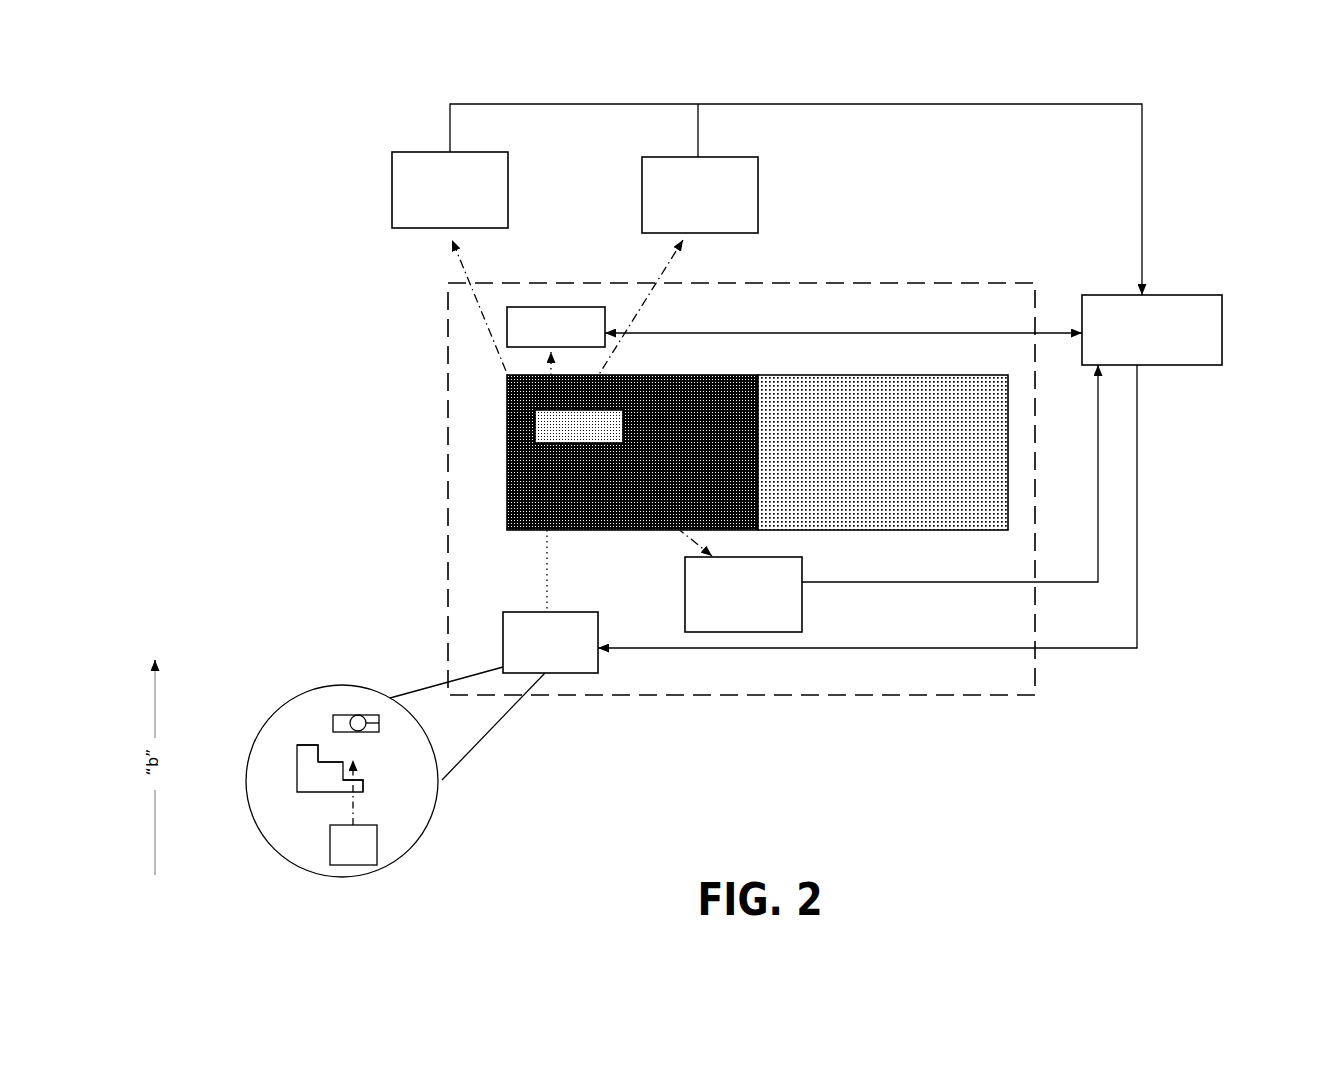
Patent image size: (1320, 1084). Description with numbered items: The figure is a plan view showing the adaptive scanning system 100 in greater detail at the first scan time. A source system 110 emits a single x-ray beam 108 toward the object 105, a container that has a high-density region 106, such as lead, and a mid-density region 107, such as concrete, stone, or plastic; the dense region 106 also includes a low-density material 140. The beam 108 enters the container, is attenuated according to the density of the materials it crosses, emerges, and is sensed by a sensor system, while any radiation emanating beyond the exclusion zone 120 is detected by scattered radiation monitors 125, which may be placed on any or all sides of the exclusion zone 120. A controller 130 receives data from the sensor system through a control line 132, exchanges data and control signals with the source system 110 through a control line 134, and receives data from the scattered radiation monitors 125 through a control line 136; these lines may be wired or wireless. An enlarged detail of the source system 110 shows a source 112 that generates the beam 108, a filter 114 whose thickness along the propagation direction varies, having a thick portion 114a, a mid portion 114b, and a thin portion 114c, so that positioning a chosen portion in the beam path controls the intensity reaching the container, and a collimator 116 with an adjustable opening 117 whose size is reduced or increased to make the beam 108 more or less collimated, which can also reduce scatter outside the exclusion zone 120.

The adaptive scanning system 100 is at (747, 73).
The object 105 is at (480, 600).
The high-density region 106 is at (507, 500).
The mid-density region 107 is at (883, 452).
The x-ray beam 108 is at (547, 582).
The source system 110 is at (548, 307).
The source 112 is at (377, 860).
The filter 114 is at (295, 792).
The thick portion 114a is at (303, 753).
The mid portion 114b is at (330, 772).
The thin portion 114c is at (365, 783).
The collimator 116 is at (333, 715).
The adjustable opening 117 is at (378, 715).
The exclusion zone 120 is at (913, 283).
The scattered radiation monitor 125 is at (508, 165).
The controller 130 is at (1222, 310).
The control line 132 is at (805, 333).
The control line 134 is at (870, 648).
The control line 136 is at (1142, 143).
The low-density material 140 is at (548, 421).